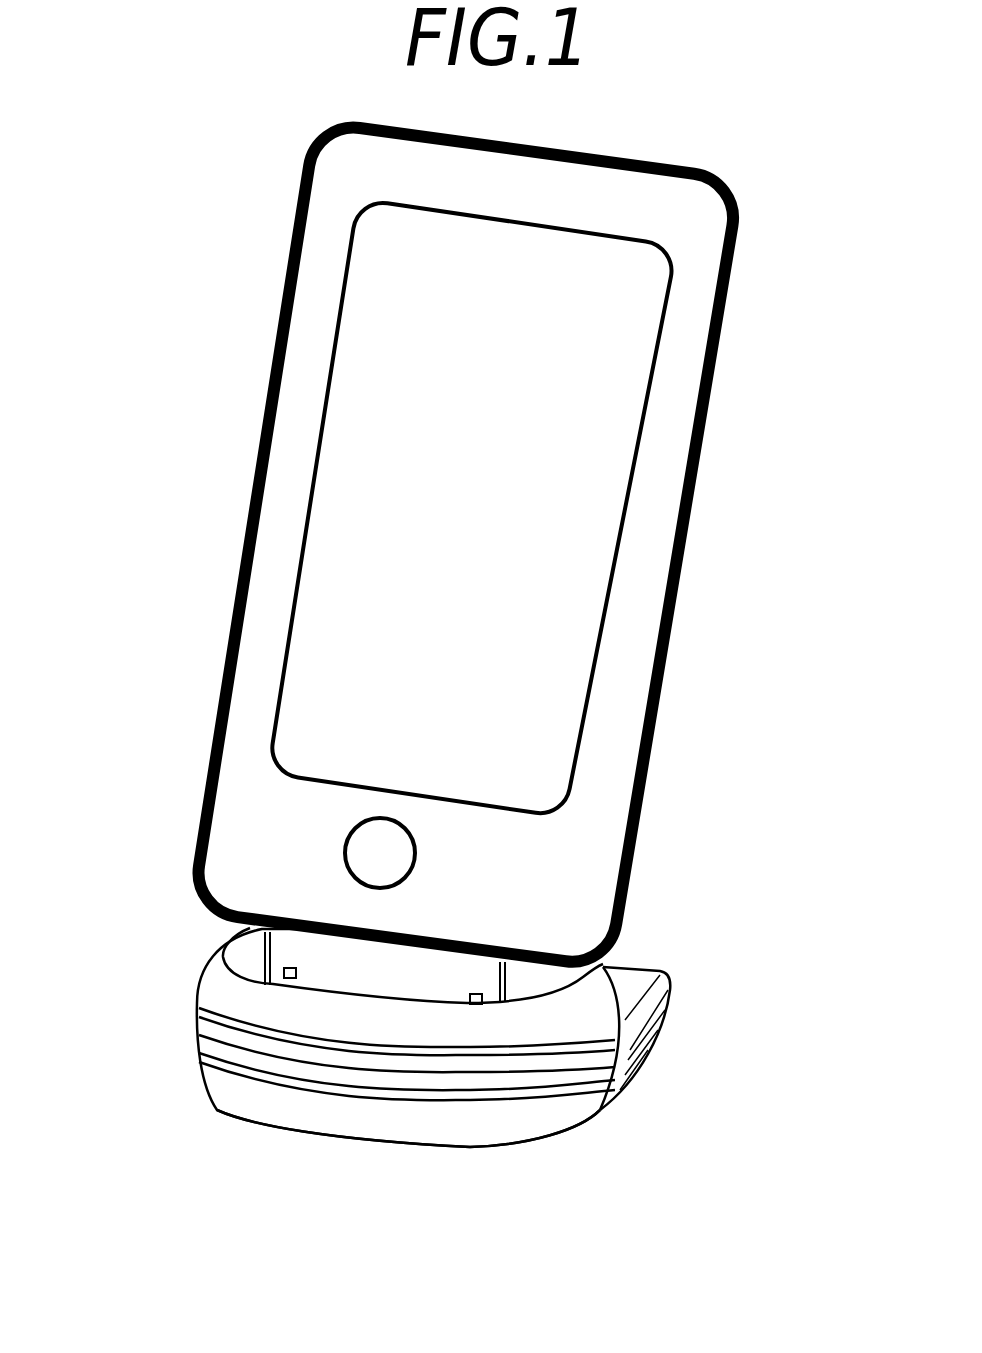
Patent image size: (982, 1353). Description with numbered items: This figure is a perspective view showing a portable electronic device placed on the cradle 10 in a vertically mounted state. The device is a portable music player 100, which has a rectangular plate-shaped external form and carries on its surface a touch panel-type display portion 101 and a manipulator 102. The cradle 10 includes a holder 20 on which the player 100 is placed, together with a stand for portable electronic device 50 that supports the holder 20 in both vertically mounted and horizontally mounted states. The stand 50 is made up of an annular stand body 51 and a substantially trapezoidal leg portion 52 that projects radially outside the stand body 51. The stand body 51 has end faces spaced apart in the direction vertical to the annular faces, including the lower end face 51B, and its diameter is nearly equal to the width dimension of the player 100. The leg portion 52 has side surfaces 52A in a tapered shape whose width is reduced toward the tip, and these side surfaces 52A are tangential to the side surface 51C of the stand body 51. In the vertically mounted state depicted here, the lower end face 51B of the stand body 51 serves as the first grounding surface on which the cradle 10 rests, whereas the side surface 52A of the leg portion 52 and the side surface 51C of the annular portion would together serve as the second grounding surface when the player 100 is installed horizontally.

The cradle 10 is at (458, 1080).
The holder 20 is at (343, 965).
The stand for portable electronic device 50 is at (215, 1078).
The stand body 51 is at (400, 1127).
The lower end face 51B is at (550, 1137).
The side surface of the stand body 51C is at (338, 1097).
The leg portion 52 is at (667, 1012).
The side surface of the leg portion 52A is at (640, 1057).
The portable music player 100 is at (694, 398).
The touch panel-type display portion 101 is at (380, 513).
The manipulator 102 is at (373, 850).